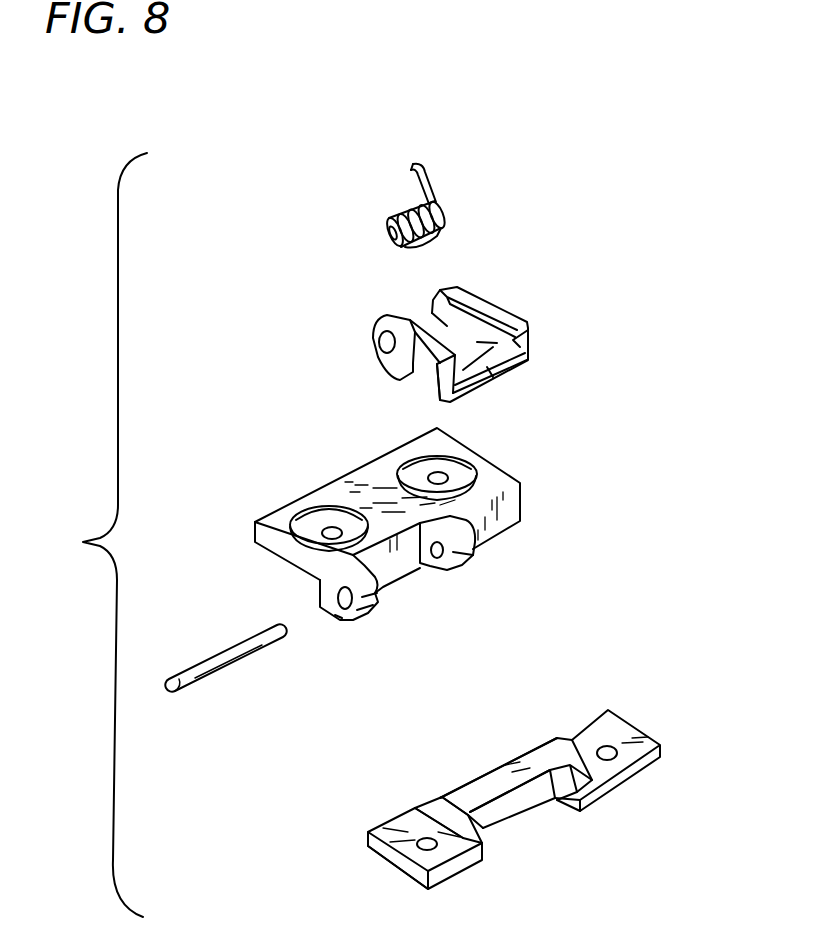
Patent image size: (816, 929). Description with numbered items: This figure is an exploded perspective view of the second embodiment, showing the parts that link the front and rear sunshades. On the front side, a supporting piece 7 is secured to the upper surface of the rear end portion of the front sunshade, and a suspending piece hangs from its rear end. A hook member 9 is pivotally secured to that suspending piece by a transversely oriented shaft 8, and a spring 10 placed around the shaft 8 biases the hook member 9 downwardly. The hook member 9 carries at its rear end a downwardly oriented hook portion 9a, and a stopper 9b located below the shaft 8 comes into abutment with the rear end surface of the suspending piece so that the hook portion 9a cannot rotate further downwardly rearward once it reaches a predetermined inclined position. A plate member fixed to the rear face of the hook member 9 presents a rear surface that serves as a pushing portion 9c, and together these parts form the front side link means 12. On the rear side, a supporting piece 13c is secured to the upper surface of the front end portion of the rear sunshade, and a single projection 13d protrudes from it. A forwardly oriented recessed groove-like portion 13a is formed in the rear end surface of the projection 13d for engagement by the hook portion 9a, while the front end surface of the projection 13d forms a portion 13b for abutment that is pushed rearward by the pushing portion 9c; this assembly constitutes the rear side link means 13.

The supporting piece 7 is at (277, 517).
The shaft 8 is at (225, 660).
The hook member 9 is at (444, 361).
The hook portion 9a is at (500, 380).
The stopper 9b is at (397, 370).
The pushing portion 9c is at (417, 387).
The spring 10 is at (441, 221).
The front side link means 12 is at (572, 352).
The rear side link means 13 is at (544, 792).
The recessed groove-like portion 13a is at (510, 807).
The portion for abutment 13b is at (432, 825).
The supporting piece 13c is at (391, 867).
The projection 13d is at (497, 780).